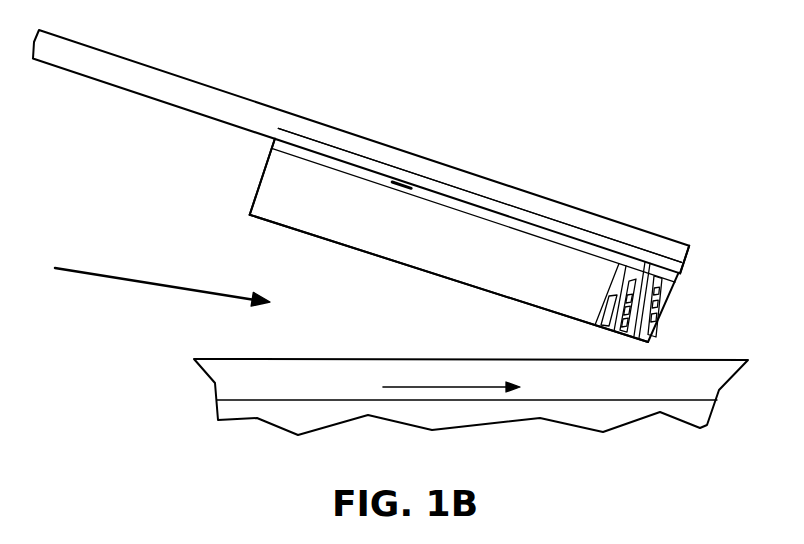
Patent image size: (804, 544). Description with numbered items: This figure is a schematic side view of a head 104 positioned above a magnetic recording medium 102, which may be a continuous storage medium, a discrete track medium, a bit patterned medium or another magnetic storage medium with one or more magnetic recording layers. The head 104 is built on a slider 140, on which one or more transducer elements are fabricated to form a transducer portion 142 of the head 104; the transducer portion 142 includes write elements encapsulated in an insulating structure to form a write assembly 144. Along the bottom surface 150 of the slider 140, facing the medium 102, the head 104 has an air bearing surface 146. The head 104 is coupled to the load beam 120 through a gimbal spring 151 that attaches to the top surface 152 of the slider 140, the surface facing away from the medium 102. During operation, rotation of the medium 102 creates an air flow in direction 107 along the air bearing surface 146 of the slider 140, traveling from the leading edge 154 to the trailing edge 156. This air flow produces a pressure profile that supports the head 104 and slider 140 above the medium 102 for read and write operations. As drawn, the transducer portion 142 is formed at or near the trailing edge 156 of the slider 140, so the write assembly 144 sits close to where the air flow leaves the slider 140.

The medium 102 is at (688, 392).
The head 104 is at (687, 241).
The direction 107 is at (450, 386).
The load beam 120 is at (298, 128).
The slider 140 is at (442, 236).
The transducer portion 142 is at (680, 283).
The write assembly 144 is at (659, 252).
The air bearing surface 146 is at (403, 275).
The bottom surface 150 is at (511, 302).
The gimbal spring 151 is at (403, 181).
The top surface 152 is at (527, 207).
The leading edge 154 is at (257, 194).
The trailing edge 156 is at (669, 307).